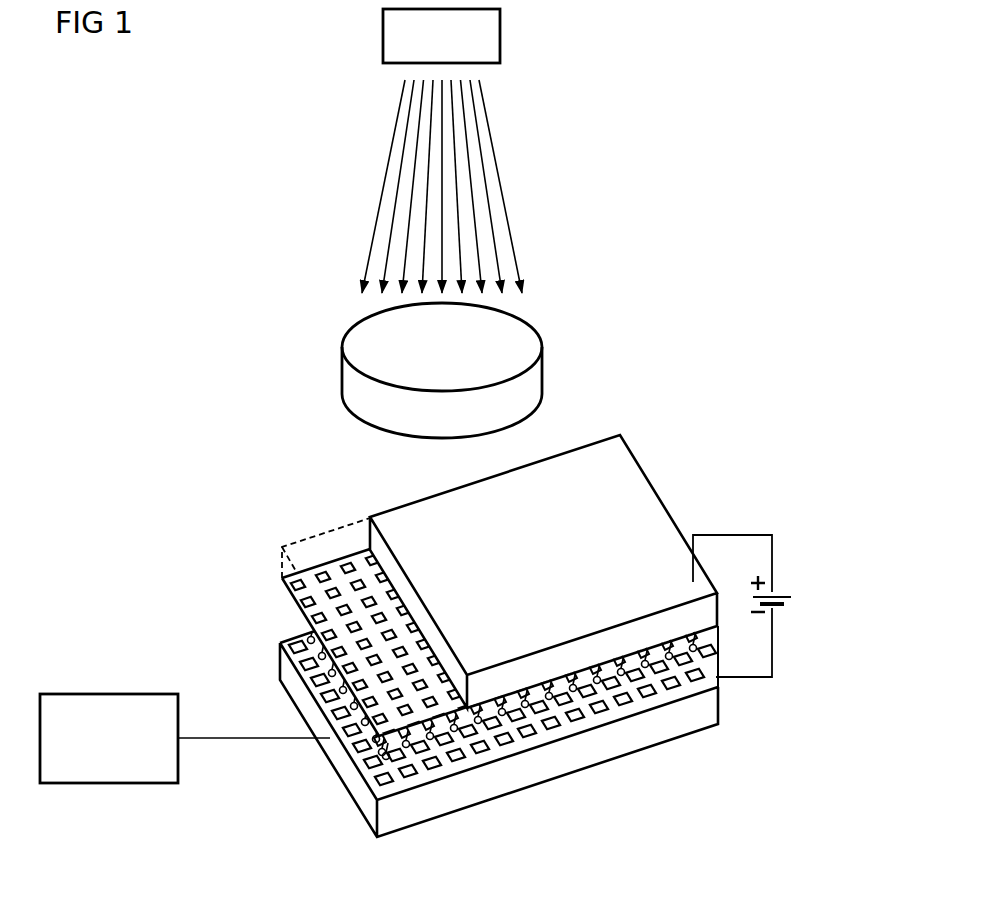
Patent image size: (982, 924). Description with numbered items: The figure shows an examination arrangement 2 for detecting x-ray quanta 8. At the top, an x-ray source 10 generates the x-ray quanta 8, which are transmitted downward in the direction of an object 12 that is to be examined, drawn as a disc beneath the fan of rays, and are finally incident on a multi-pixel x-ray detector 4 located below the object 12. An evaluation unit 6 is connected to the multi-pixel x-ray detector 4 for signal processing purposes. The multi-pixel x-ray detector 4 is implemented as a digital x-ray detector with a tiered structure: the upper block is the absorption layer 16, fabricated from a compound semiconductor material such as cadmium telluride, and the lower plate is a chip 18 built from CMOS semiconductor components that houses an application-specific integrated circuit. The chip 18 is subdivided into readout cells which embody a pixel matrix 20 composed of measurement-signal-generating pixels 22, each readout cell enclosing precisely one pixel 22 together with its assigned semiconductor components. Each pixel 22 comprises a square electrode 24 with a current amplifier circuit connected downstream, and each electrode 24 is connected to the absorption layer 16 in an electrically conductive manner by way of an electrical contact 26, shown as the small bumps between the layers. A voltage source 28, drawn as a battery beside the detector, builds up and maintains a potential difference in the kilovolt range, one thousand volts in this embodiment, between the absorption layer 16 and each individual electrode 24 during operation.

The examination arrangement 2 is at (706, 66).
The multi-pixel x-ray detector 4 is at (752, 433).
The evaluation unit 6 is at (108, 694).
The x-ray quanta 8 is at (492, 172).
The x-ray source 10 is at (500, 33).
The object 12 is at (533, 387).
The absorption layer 16 is at (645, 493).
The chip 18 is at (735, 706).
The pixel matrix 20 is at (524, 752).
The pixel 22 is at (703, 694).
The electrode 24 is at (370, 782).
The electrical contact 26 is at (380, 780).
The voltage source 28 is at (786, 581).